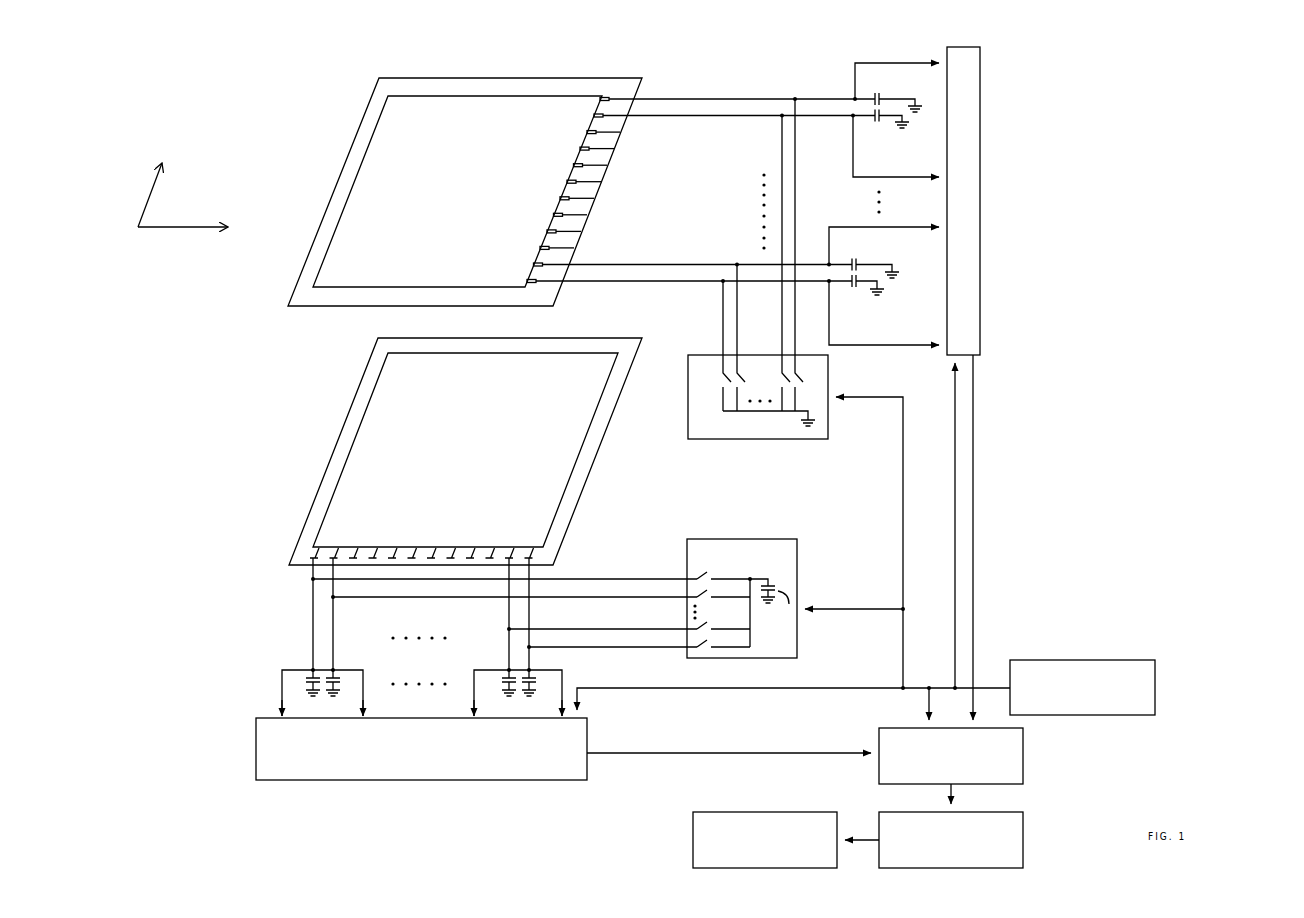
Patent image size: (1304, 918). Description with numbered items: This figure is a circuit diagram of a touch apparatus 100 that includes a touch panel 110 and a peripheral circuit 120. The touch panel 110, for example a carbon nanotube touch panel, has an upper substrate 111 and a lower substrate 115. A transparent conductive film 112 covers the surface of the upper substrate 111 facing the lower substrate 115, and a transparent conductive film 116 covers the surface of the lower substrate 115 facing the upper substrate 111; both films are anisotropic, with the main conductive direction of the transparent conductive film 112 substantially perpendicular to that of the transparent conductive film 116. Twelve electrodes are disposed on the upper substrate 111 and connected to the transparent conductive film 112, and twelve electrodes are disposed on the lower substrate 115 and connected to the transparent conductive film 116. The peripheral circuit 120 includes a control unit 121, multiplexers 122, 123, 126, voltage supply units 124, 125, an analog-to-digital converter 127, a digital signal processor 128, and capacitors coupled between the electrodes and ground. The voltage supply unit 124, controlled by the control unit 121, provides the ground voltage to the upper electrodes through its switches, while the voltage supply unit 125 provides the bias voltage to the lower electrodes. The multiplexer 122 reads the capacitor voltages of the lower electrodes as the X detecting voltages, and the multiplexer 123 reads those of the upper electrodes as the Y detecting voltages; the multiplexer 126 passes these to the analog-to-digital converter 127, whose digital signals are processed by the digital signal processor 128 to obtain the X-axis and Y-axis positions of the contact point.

The touch apparatus 100 is at (192, 780).
The touch panel 110 is at (258, 405).
The upper substrate 111 is at (572, 88).
The transparent conductive film 112 is at (437, 115).
The lower substrate 115 is at (538, 348).
The transparent conductive film 116 is at (485, 368).
The peripheral circuit 120 is at (1058, 402).
The control unit 121 is at (1075, 660).
The multiplexer 122 is at (400, 718).
The multiplexer 123 is at (985, 121).
The voltage supply unit 124 is at (832, 412).
The voltage supply unit 125 is at (800, 632).
The multiplexer 126 is at (900, 727).
The analog-to-digital converter 127 is at (900, 812).
The digital signal processor 128 is at (715, 812).